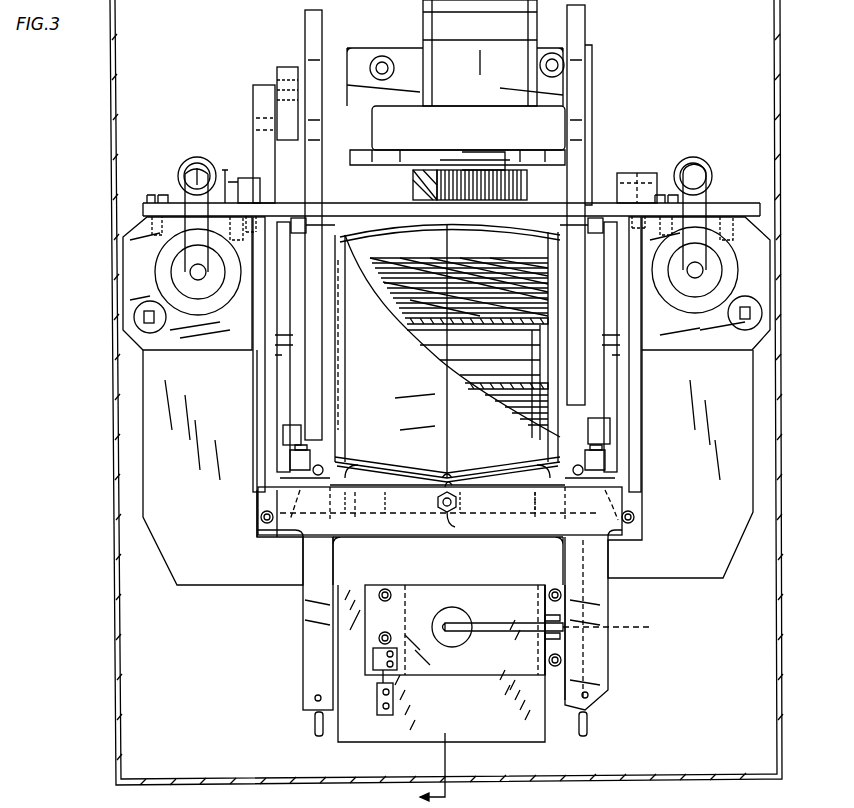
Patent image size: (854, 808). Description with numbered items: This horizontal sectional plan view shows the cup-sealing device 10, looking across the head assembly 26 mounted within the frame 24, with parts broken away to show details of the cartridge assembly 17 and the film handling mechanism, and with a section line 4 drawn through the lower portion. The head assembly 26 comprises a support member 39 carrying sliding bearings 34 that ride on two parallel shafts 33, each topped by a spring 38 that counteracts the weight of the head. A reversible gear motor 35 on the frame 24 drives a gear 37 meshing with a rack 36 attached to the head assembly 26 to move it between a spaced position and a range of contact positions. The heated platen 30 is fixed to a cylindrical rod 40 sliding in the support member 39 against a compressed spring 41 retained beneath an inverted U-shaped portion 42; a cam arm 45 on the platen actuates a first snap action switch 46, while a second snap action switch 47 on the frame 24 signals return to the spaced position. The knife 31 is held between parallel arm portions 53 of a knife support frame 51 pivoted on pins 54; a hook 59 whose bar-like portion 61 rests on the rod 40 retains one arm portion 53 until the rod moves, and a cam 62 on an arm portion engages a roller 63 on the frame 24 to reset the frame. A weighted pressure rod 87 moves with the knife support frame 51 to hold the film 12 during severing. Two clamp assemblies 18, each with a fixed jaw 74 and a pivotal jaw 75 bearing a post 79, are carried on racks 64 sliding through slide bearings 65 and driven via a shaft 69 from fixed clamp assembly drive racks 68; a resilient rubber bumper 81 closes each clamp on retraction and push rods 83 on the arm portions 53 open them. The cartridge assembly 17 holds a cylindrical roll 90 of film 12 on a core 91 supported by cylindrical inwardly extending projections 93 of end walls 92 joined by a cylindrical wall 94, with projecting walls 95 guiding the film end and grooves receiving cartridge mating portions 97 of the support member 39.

The section line 4- 4 is at (420, 770).
The device 10 is at (92, 116).
The heat sealable film 12 is at (505, 242).
The cartridge assembly 17 is at (412, 399).
The clamp assemblies 18 is at (325, 530).
The frame 24 is at (698, 693).
The head assembly 26 is at (235, 590).
The heated platen 30 is at (490, 742).
The knife 31 is at (405, 488).
The parallel shafts 33 is at (215, 285).
The sliding bearings 34 is at (162, 256).
The reversible gear motor 35 is at (488, 37).
The rack 36 is at (413, 188).
The gear 37 is at (527, 187).
The springs 38 is at (192, 165).
The support member 39 is at (185, 448).
The cylindrical rod 40 is at (448, 615).
The compressed spring 41 is at (446, 404).
The inverted U-shaped portion 42 is at (500, 665).
The cam arm 45 is at (377, 698).
The first snap action switch 46 is at (373, 655).
The second snap action switch 47 is at (234, 175).
The knife support frame 51 is at (255, 506).
The arm portions 53 is at (265, 397).
The pins 54 is at (262, 187).
The hook 59 is at (606, 626).
The bar-like portion 61 is at (510, 620).
The cam 62 is at (253, 104).
The roller 63 is at (282, 67).
The racks 64 is at (335, 18).
The slide bearings 65 is at (318, 237).
The clamp assembly drive racks 68 is at (144, 317).
The shaft 69 is at (278, 360).
The fixed jaw 74 is at (447, 513).
The pivotal jaw 75 is at (340, 514).
The post 79 is at (447, 486).
The resilient rubber bumper 81 is at (295, 468).
The push rods 83 is at (315, 726).
The weighted pressure rod 87 is at (458, 509).
The cylindrical roll 90 is at (500, 406).
The core 91 is at (430, 330).
The end walls 92 is at (485, 242).
The cylindrical inwardly extending projections 93 is at (530, 334).
The cylindrical wall 94 is at (395, 237).
The projecting walls 95 is at (430, 475).
The cartridge mating portions 97 is at (338, 340).